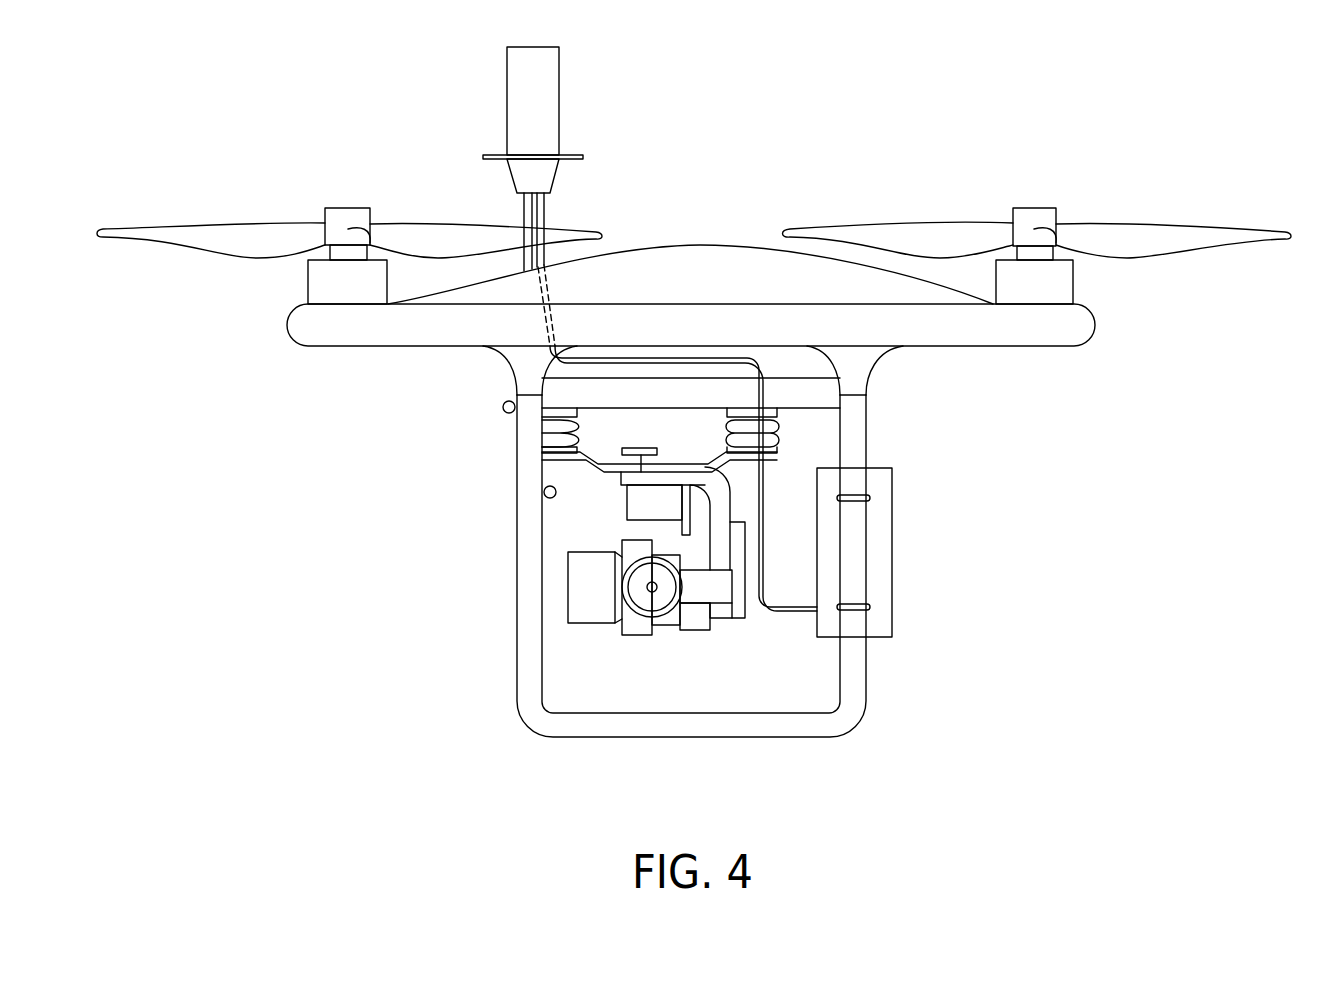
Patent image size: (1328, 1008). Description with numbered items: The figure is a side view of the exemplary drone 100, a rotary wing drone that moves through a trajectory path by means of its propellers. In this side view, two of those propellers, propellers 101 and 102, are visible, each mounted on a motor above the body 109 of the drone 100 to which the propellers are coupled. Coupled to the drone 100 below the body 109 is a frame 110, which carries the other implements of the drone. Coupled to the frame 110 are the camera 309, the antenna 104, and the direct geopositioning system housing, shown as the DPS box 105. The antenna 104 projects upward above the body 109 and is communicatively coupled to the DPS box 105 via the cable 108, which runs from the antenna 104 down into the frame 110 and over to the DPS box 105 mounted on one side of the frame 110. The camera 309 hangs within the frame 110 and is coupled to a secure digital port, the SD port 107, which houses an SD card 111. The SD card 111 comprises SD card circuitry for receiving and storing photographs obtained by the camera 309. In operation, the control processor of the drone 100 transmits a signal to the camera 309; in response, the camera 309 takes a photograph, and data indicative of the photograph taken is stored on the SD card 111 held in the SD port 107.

The drone 100 is at (1214, 96).
The propeller 101 is at (203, 222).
The propeller 102 is at (904, 222).
The antenna 104 is at (508, 91).
The direct geopositioning system (DPS) housing 105 is at (880, 527).
The secure digital (SD) port 107 is at (620, 452).
The cable 108 is at (763, 480).
The body 109 is at (966, 347).
The frame 110 is at (533, 612).
The SD card 111 is at (641, 458).
The camera 309 is at (590, 612).